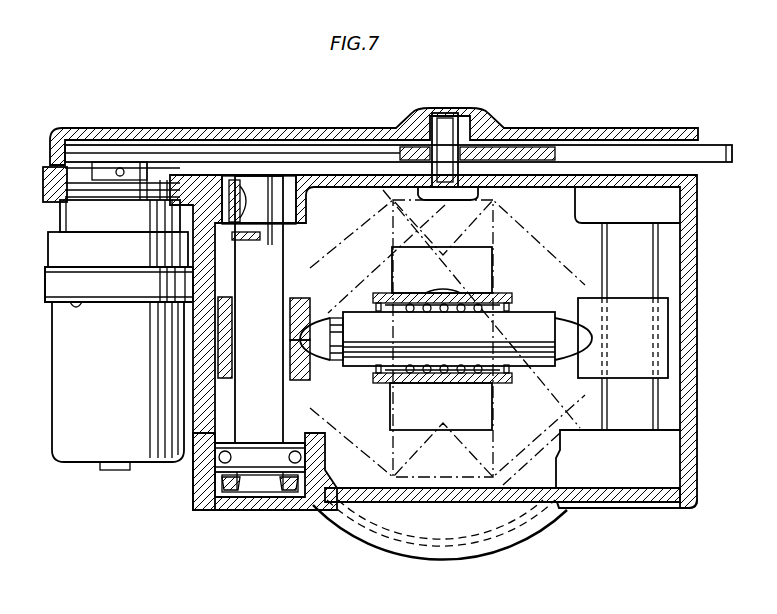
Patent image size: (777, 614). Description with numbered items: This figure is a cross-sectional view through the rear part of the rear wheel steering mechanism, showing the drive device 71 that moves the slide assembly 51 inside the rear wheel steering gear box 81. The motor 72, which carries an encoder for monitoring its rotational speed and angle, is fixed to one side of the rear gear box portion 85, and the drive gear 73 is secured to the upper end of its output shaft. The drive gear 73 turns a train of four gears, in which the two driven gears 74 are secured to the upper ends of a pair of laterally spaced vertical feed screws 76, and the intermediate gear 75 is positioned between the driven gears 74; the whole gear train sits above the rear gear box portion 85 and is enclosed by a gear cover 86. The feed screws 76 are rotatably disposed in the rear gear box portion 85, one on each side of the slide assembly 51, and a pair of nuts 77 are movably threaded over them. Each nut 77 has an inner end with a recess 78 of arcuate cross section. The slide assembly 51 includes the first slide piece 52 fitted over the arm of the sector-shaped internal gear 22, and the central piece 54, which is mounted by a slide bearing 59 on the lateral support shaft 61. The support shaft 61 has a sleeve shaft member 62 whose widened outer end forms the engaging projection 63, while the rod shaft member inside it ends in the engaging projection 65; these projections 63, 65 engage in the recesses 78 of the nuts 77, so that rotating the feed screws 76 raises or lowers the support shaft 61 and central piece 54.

The internal gear 22 is at (468, 528).
The slide assembly 51 is at (505, 262).
The first slide piece 52 is at (450, 250).
The central piece 54 is at (462, 378).
The slide bearing 59 is at (465, 300).
The support shaft 61 is at (543, 375).
The sleeve shaft member 62 is at (518, 330).
The engaging projection 63 is at (585, 332).
The engaging projection 65 is at (290, 338).
The drive device 71 is at (38, 286).
The motor 72 is at (58, 375).
The drive gear 73 is at (72, 148).
The driven gear 74 is at (258, 148).
The intermediate gear 75 is at (532, 150).
The feed screw 76 is at (240, 405).
The nut 77 is at (297, 298).
The recess 78 is at (306, 372).
The rear wheel steering gear box 81 is at (567, 512).
The rear gear box portion 85 is at (690, 240).
The gear cover 86 is at (378, 128).